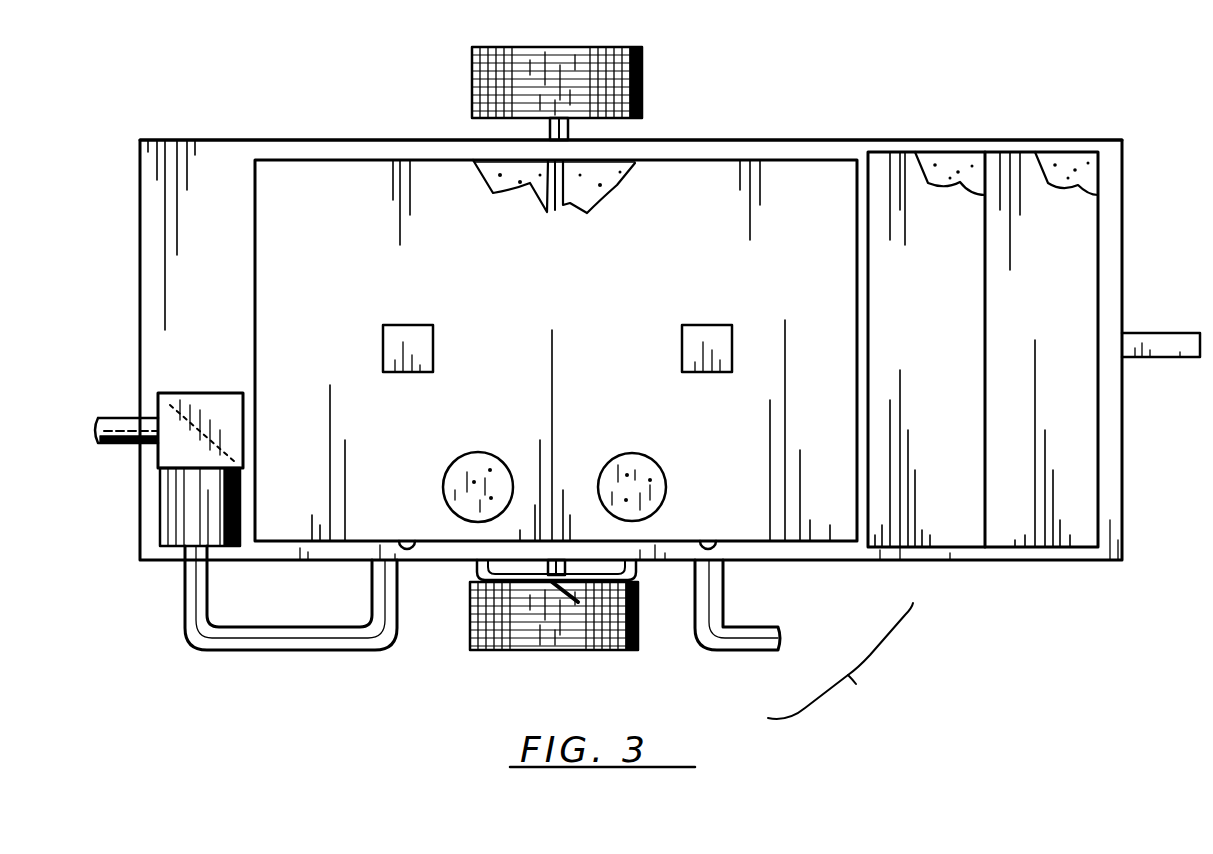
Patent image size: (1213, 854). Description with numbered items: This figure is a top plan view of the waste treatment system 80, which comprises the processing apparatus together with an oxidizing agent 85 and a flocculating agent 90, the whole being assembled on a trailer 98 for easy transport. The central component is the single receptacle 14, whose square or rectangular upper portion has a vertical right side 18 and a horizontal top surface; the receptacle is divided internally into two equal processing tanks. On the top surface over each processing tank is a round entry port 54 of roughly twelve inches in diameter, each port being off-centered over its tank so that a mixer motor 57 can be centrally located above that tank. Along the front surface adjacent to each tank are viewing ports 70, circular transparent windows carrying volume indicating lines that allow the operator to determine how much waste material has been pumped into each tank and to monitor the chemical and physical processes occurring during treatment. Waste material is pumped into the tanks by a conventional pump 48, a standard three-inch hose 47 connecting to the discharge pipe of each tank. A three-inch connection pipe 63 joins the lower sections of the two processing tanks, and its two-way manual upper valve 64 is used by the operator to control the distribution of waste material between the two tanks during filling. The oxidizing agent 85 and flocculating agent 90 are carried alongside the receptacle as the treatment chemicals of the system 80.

The trailer 98 is at (132, 133).
The receptacle 14 is at (262, 133).
The vertical right side 18 is at (255, 272).
The pump 48 is at (160, 406).
The hose 47 is at (315, 637).
The viewing ports 70 is at (417, 546).
The connection pipe 63 is at (523, 584).
The upper valve 64 is at (580, 592).
The mixer motor 57 is at (411, 333).
The entry port 54 is at (455, 480).
The oxidizing agent 85 is at (944, 155).
The flocculating agent 90 is at (1065, 155).
The system 80 is at (840, 661).